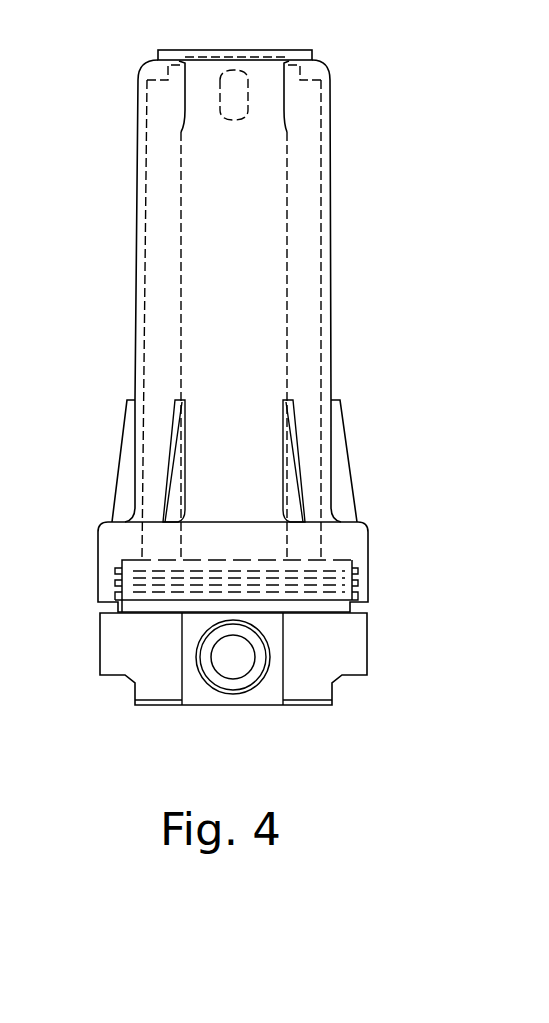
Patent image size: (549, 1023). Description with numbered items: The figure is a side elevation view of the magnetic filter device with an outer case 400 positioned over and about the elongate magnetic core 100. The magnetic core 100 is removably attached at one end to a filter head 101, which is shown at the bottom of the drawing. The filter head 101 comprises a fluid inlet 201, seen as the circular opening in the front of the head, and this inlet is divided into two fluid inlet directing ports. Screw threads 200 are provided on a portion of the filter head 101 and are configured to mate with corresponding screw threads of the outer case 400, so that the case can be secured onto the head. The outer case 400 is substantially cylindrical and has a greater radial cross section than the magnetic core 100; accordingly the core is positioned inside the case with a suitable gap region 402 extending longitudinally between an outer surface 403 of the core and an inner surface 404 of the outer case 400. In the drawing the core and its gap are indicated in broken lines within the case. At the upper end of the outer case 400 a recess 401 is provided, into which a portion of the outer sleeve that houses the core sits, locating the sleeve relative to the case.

The magnetic core 100 is at (251, 288).
The filter head 101 is at (350, 638).
The screw threads 200 is at (350, 563).
The fluid inlet 201 is at (228, 665).
The outer case 400 is at (137, 282).
The recess 401 is at (155, 68).
The gap region 402 is at (297, 163).
The outer surface 403 is at (288, 131).
The inner surface 404 is at (322, 230).